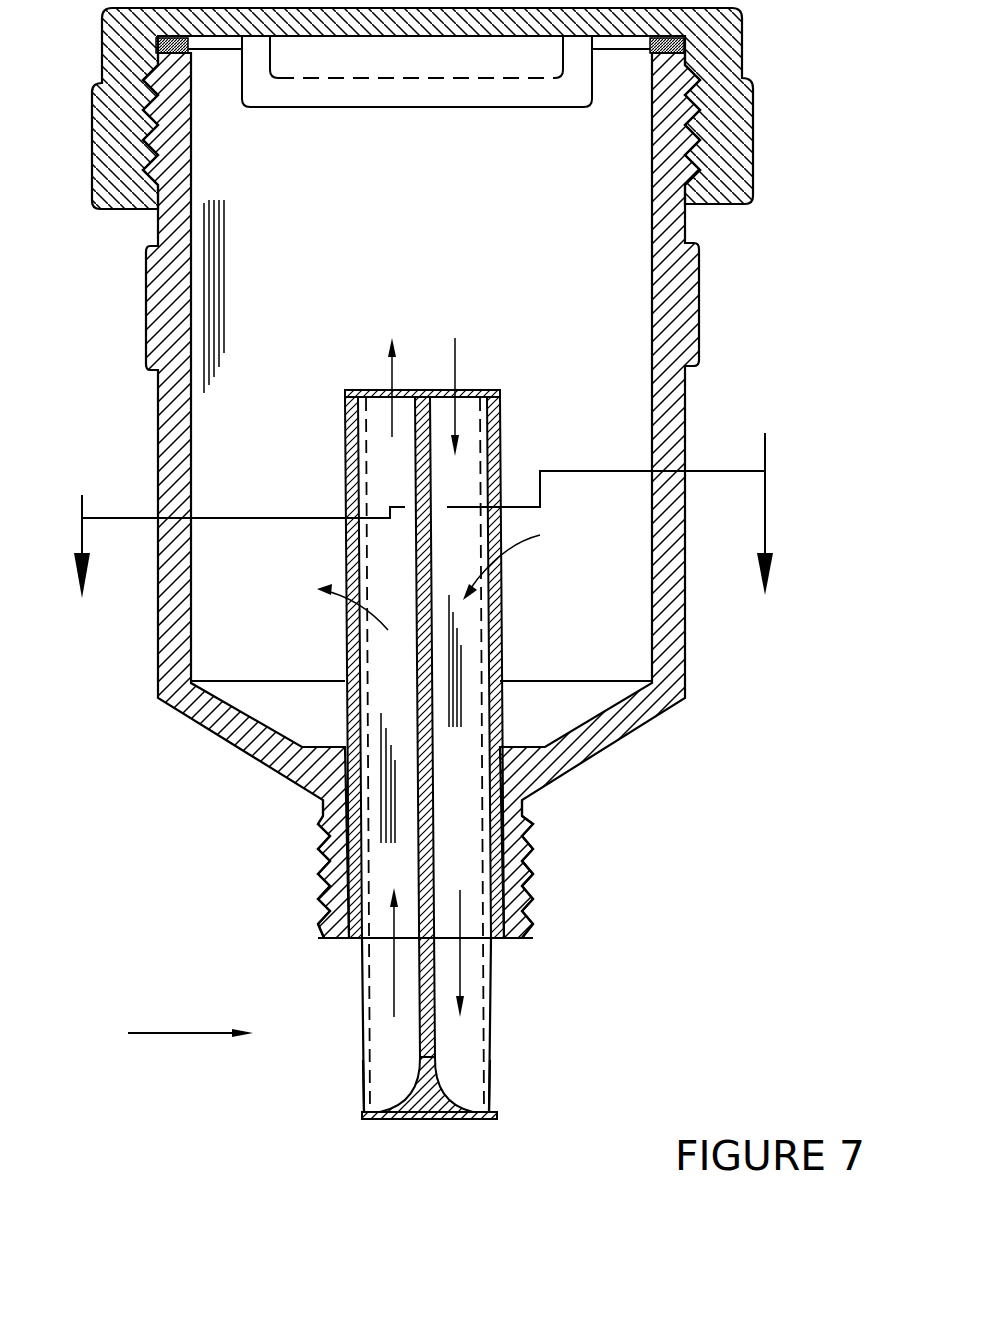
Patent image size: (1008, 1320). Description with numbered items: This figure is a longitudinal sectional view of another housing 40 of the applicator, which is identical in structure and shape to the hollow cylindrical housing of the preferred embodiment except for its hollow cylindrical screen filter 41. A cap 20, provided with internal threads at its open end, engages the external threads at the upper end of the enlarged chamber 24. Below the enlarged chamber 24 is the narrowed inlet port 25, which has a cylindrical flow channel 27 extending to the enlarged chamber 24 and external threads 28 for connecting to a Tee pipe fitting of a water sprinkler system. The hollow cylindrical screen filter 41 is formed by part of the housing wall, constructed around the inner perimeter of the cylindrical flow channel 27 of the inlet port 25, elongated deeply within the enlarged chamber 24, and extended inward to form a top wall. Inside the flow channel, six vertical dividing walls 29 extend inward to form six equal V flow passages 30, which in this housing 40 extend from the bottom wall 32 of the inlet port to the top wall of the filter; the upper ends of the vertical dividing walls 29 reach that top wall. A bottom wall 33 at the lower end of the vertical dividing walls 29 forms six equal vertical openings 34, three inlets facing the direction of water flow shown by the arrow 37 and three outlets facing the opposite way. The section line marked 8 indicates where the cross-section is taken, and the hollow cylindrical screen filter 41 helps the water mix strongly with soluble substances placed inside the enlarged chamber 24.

The cap 20 is at (765, 42).
The housing 40 is at (725, 310).
The enlarged chamber 24 is at (627, 428).
The hollow cylindrical screen filter 41 is at (503, 604).
The V flow passages 30 is at (395, 870).
The narrowed inlet port 25 is at (332, 893).
The cylindrical flow channel 27 is at (525, 835).
The external threads 28 is at (533, 880).
The bottom wall of the narrowed inlet port 32 is at (340, 947).
The vertical openings 34 is at (380, 1012).
The vertical dividing walls 29 is at (367, 1096).
The bottom wall 33 is at (400, 1122).
The arrow 37 is at (173, 1030).
The section line 8- 8 is at (426, 540).